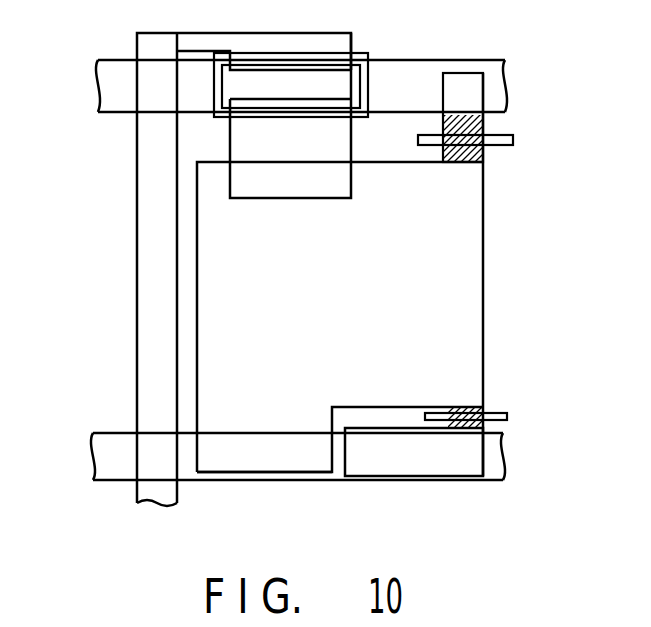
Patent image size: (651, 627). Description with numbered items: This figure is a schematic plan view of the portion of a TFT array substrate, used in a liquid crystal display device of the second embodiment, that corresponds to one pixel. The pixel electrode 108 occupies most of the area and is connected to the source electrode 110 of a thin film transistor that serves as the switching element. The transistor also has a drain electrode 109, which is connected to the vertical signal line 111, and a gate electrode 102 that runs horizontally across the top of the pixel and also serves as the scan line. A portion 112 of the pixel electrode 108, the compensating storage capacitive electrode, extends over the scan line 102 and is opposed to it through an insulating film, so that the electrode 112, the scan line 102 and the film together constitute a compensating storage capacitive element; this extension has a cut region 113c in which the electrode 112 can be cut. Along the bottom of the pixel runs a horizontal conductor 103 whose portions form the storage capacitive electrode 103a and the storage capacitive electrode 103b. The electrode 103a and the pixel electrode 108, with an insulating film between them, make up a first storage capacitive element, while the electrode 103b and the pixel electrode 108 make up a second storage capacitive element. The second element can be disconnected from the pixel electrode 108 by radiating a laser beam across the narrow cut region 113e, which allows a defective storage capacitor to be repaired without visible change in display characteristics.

The gate electrode 102 is at (102, 92).
The drain bus line 103 is at (107, 449).
The storage capacitive electrode 103a is at (245, 458).
The storage capacitive electrode 103b is at (408, 457).
The pixel electrode 108 is at (467, 278).
The drain electrode 109 is at (274, 45).
The source electrode 110 is at (278, 185).
The signal line 111 is at (137, 178).
The compensating storage capacitive electrode 112 is at (478, 100).
The cut region 113c is at (485, 155).
The cut region 113e is at (482, 410).